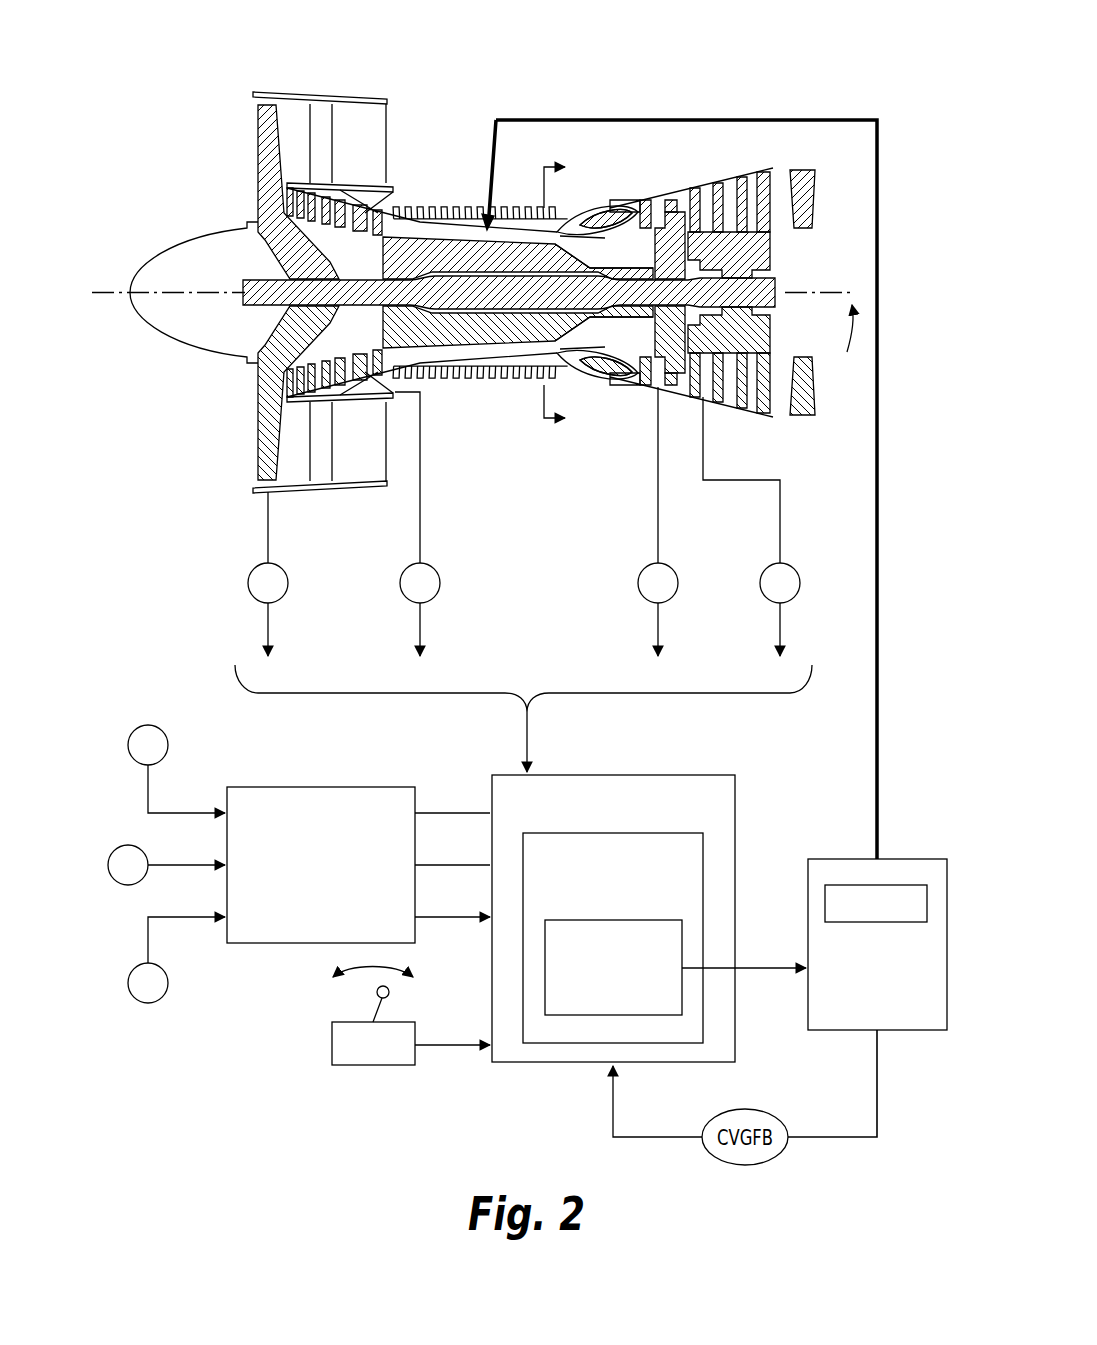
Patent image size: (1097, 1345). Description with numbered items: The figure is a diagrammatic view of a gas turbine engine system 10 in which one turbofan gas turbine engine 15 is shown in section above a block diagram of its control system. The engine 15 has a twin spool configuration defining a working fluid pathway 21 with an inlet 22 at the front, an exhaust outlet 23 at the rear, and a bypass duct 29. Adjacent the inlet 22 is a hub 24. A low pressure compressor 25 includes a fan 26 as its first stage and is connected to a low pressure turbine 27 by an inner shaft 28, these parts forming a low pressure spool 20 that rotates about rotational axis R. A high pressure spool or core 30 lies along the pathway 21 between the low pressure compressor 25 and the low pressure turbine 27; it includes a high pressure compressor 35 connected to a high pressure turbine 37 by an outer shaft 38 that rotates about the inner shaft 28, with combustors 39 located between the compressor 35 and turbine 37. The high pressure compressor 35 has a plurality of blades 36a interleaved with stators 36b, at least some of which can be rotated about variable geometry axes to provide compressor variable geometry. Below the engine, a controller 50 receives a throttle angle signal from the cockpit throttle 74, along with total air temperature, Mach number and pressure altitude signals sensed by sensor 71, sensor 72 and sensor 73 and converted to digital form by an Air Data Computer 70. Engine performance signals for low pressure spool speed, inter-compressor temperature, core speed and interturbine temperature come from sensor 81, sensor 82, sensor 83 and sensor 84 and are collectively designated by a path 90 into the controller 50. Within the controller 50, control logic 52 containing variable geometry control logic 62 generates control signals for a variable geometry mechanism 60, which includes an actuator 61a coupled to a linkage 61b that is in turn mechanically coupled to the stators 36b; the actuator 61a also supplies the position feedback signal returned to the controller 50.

The gas turbine engine system 10 is at (147, 537).
The gas turbine engine 15 is at (297, 90).
The low pressure spool 20 is at (773, 262).
The working fluid pathway 21 is at (175, 312).
The inlet 22 is at (253, 97).
The exhaust outlet 23 is at (805, 232).
The hub 24 is at (175, 243).
The low pressure compressor 25 is at (304, 265).
The fan 26 is at (258, 157).
The low pressure turbine 27 is at (752, 178).
The inner shaft 28 is at (283, 312).
The bypass duct 29 is at (385, 105).
The high pressure spool or core 30 is at (380, 328).
The high pressure compressor 35 is at (580, 338).
The blades 36a is at (414, 222).
The stators 36b is at (450, 227).
The high pressure turbine 37 is at (683, 203).
The outer shaft 38 is at (620, 270).
The combustors 39 is at (597, 213).
The controller 50 is at (649, 889).
The control logic 52 is at (703, 887).
The variable geometry mechanism 60 is at (877, 954).
The actuator 61a is at (890, 883).
The linkage 61b is at (625, 118).
The variable geometry control logic 62 is at (555, 920).
The Air Data Computer 70 is at (326, 786).
The total air temperature sensor 71 is at (168, 745).
The Mach number sensor 72 is at (130, 885).
The pressure altitude sensor 73 is at (167, 997).
The throttle 74 is at (357, 1074).
The low pressure spool speed sensor 81 is at (283, 568).
The inter-compressor temperature sensor 82 is at (435, 568).
The core speed sensor 83 is at (672, 568).
The interturbine temperature sensor 84 is at (795, 568).
The signal path 90 is at (527, 738).